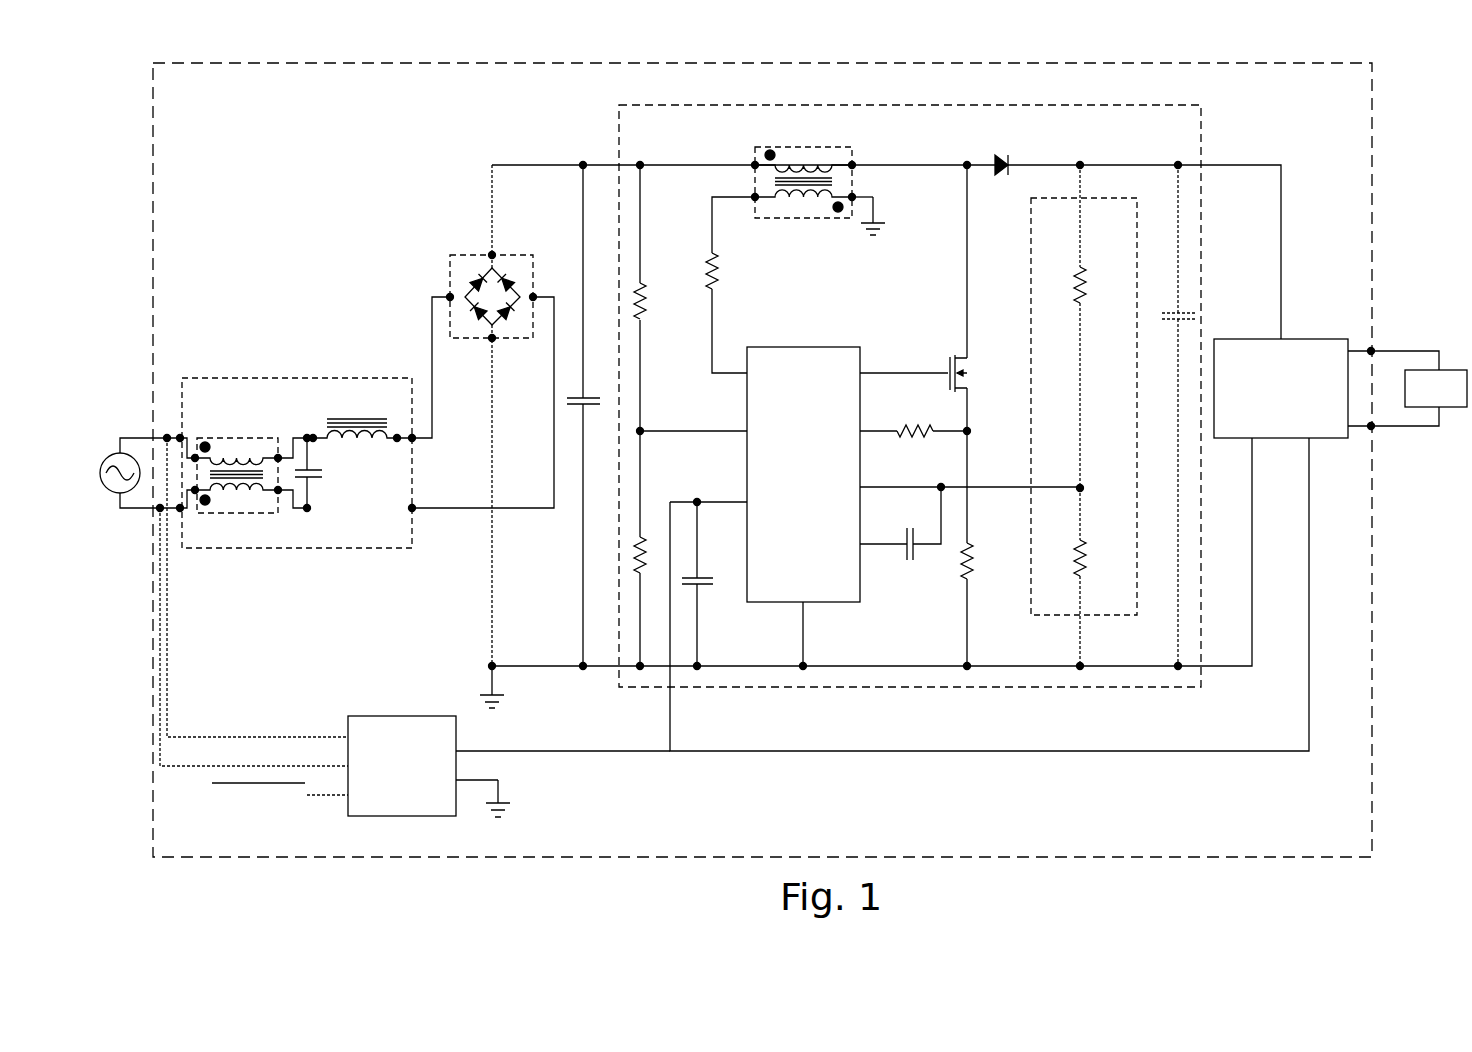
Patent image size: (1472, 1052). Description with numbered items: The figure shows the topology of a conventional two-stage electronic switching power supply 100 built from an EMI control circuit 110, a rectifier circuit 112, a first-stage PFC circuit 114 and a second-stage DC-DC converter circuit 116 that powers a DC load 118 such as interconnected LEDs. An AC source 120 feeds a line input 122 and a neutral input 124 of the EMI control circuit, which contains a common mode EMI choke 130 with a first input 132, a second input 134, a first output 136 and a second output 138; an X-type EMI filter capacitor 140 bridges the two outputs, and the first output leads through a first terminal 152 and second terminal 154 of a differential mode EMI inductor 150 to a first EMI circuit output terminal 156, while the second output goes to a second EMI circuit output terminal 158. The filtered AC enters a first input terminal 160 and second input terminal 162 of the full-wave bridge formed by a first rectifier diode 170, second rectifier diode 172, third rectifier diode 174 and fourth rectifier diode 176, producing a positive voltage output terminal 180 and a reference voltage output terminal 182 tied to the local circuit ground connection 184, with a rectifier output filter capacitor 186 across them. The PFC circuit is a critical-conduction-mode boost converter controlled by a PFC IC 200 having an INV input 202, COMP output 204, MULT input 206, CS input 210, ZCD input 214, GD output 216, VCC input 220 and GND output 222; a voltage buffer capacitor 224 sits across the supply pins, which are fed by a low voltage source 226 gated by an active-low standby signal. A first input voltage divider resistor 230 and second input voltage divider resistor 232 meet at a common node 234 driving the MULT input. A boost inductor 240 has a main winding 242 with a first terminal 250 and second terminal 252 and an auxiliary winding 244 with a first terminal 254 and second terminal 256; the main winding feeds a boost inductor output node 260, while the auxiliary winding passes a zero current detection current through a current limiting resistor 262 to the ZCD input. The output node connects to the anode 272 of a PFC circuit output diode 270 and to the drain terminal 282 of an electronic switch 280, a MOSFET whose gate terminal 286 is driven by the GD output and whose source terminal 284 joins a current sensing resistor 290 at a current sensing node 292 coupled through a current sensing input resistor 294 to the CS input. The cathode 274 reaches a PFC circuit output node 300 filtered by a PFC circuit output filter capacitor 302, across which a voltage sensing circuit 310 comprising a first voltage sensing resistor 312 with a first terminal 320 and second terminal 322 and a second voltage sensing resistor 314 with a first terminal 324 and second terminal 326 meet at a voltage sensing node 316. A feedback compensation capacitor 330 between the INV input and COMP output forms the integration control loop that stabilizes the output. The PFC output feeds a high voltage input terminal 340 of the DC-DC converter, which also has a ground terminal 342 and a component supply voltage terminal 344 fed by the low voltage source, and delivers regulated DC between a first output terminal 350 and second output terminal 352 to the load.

The two-stage electronic switching power supply 100 is at (405, 63).
The EMI control circuit 110 is at (268, 378).
The rectifier circuit 112 is at (510, 255).
The first-stage circuit 114 is at (640, 105).
The second-stage circuit 116 is at (1265, 338).
The DC load 118 is at (1455, 368).
The AC source 120 is at (103, 458).
The first (line) input 122 is at (180, 436).
The second (neutral) input 124 is at (180, 512).
The common mode EMI choke 130 is at (233, 437).
The first input 132 is at (199, 452).
The second input 134 is at (196, 494).
The first output 136 is at (279, 454).
The second output 138 is at (278, 494).
The X-type EMI filter capacitor 140 is at (311, 476).
The differential mode EMI inductor 150 is at (330, 430).
The first terminal 152 is at (316, 441).
The second terminal 154 is at (397, 442).
The first EMI circuit output terminal 156 is at (413, 434).
The second EMI circuit output terminal 158 is at (412, 512).
The first input terminal 160 is at (450, 295).
The second input terminal 162 is at (534, 295).
The first rectifier diode 170 is at (474, 280).
The second rectifier diode 172 is at (512, 285).
The third rectifier diode 174 is at (478, 313).
The fourth rectifier diode 176 is at (508, 313).
The positive voltage (V+) output terminal 180 is at (493, 252).
The reference voltage output terminal 182 is at (493, 342).
The local circuit ground connection 184 is at (488, 695).
The rectifier output filter capacitor 186 is at (585, 397).
The power factor corrector integrated circuit 200 is at (782, 346).
The inverting (INV) input 202 is at (862, 489).
The compensation (COMP) output 204 is at (865, 546).
The multiplier (MULT) input 206 is at (746, 434).
The current sensing (CS) input 210 is at (870, 434).
The zero current detection (ZCD) input 214 is at (746, 374).
The gate driver (GD) output 216 is at (862, 371).
The supply voltage (VCC) input 220 is at (746, 506).
The ground return (GND) output 222 is at (806, 604).
The voltage buffer capacitor 224 is at (704, 588).
The low voltage source 226 is at (396, 715).
The first input voltage divider resistor 230 is at (643, 292).
The second input voltage divider resistor 232 is at (642, 540).
The common node 234 is at (642, 428).
The boost inductor 240 is at (785, 147).
The main winding 242 is at (810, 170).
The auxiliary winding 244 is at (818, 198).
The first terminal 250 is at (753, 163).
The second terminal 252 is at (855, 163).
The first terminal 254 is at (855, 195).
The second terminal 256 is at (753, 195).
The boost inductor output node 260 is at (965, 168).
The current limiting resistor 262 is at (710, 268).
The PFC circuit output diode 270 is at (1003, 176).
The anode 272 is at (994, 163).
The cathode 274 is at (1010, 163).
The electronic switch 280 is at (950, 374).
The drain terminal 282 is at (965, 357).
The source terminal 284 is at (963, 390).
The gate terminal 286 is at (964, 378).
The current sensing resistor 290 is at (969, 578).
The current sensing node 292 is at (969, 436).
The current sensing input resistor 294 is at (913, 437).
The PFC circuit output node 300 is at (1180, 163).
The PFC circuit output filter capacitor 302 is at (1178, 312).
The voltage sensing circuit 310 is at (1085, 198).
The first voltage sensing resistor 312 is at (1077, 290).
The second voltage sensing resistor 314 is at (1077, 563).
The voltage sensing node 316 is at (1078, 485).
The first terminal 320 is at (1082, 268).
The second terminal 322 is at (1082, 312).
The first terminal 324 is at (1082, 540).
The second terminal 326 is at (1082, 578).
The feedback compensation capacitor 330 is at (915, 548).
The high voltage input terminal 340 is at (1283, 338).
The ground terminal 342 is at (1254, 440).
The component supply voltage terminal 344 is at (1311, 440).
The first output terminal 350 is at (1372, 349).
The second output terminal 352 is at (1373, 428).